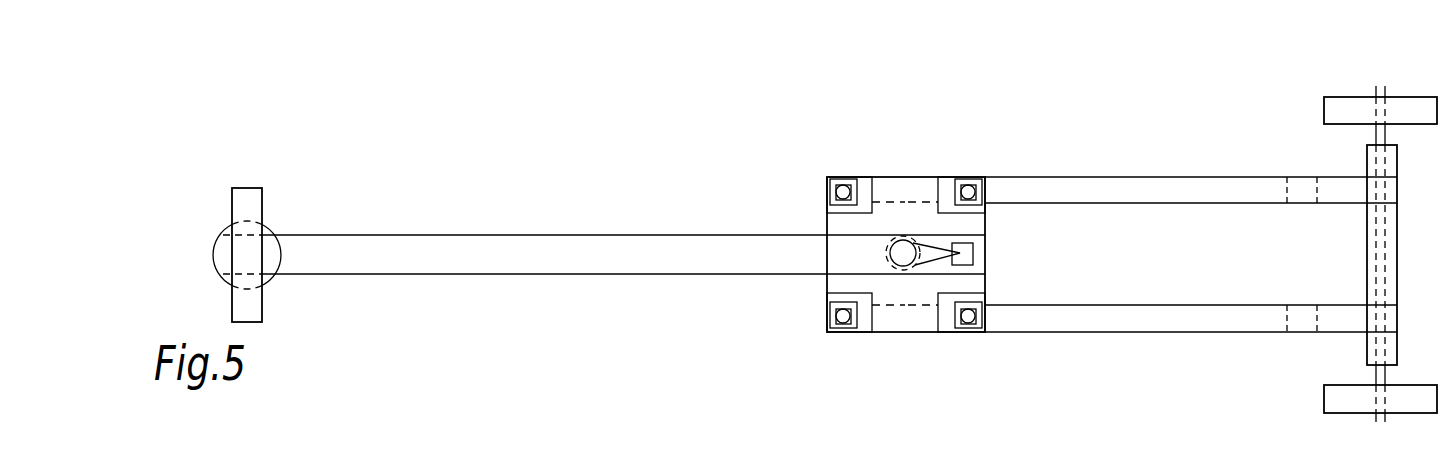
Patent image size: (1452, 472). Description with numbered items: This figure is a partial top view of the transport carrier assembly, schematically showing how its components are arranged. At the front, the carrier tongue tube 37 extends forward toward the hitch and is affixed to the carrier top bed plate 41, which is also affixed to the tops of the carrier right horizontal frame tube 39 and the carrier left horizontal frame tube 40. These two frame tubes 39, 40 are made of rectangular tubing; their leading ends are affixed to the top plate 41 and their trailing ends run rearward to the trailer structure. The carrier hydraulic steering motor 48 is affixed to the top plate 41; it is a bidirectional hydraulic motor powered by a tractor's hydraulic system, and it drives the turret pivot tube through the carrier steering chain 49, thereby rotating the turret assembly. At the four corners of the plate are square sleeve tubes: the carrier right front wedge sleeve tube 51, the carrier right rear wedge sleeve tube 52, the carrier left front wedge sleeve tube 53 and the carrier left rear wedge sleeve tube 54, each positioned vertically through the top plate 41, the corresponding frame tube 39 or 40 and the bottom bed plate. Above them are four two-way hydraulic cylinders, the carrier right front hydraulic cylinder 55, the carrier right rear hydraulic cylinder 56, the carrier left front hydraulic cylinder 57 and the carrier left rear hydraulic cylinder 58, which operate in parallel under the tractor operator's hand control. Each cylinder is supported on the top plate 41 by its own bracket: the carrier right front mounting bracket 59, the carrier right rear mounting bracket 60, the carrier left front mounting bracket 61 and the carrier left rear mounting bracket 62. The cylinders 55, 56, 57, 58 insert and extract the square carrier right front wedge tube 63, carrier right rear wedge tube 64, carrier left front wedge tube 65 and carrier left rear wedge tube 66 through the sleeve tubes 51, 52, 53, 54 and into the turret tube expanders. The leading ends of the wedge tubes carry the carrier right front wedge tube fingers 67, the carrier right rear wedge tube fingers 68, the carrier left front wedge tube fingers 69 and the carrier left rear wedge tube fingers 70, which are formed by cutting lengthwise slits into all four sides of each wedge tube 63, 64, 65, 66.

The carrier tongue tube 37 is at (433, 240).
The carrier right horizontal frame tube 39 is at (1172, 183).
The carrier left horizontal frame tube 40 is at (1172, 325).
The carrier top bed plate 41 is at (907, 177).
The carrier hydraulic steering motor 48 is at (975, 250).
The carrier steering chain 49 is at (937, 257).
The carrier right front wedge sleeve tube 51 is at (833, 192).
The carrier right rear wedge sleeve tube 52 is at (966, 188).
The carrier left front wedge sleeve tube 53 is at (833, 316).
The carrier left rear wedge sleeve tube 54 is at (965, 325).
The carrier right front hydraulic cylinder 55 is at (842, 188).
The carrier right rear hydraulic cylinder 56 is at (967, 188).
The carrier left front hydraulic cylinder 57 is at (842, 324).
The carrier left rear hydraulic cylinder 58 is at (969, 324).
The carrier right front mounting bracket 59 is at (881, 176).
The carrier right rear mounting bracket 60 is at (936, 183).
The carrier left front mounting bracket 61 is at (873, 325).
The carrier left rear mounting bracket 62 is at (938, 325).
The carrier right front wedge tube 63 is at (843, 201).
The carrier right rear wedge tube 64 is at (968, 210).
The carrier left front wedge tube 65 is at (845, 325).
The carrier left rear wedge tube 66 is at (978, 316).
The carrier right front wedge tube fingers 67 is at (845, 188).
The carrier right rear wedge tube fingers 68 is at (982, 192).
The carrier left front wedge tube fingers 69 is at (843, 300).
The carrier left rear wedge tube fingers 70 is at (958, 300).